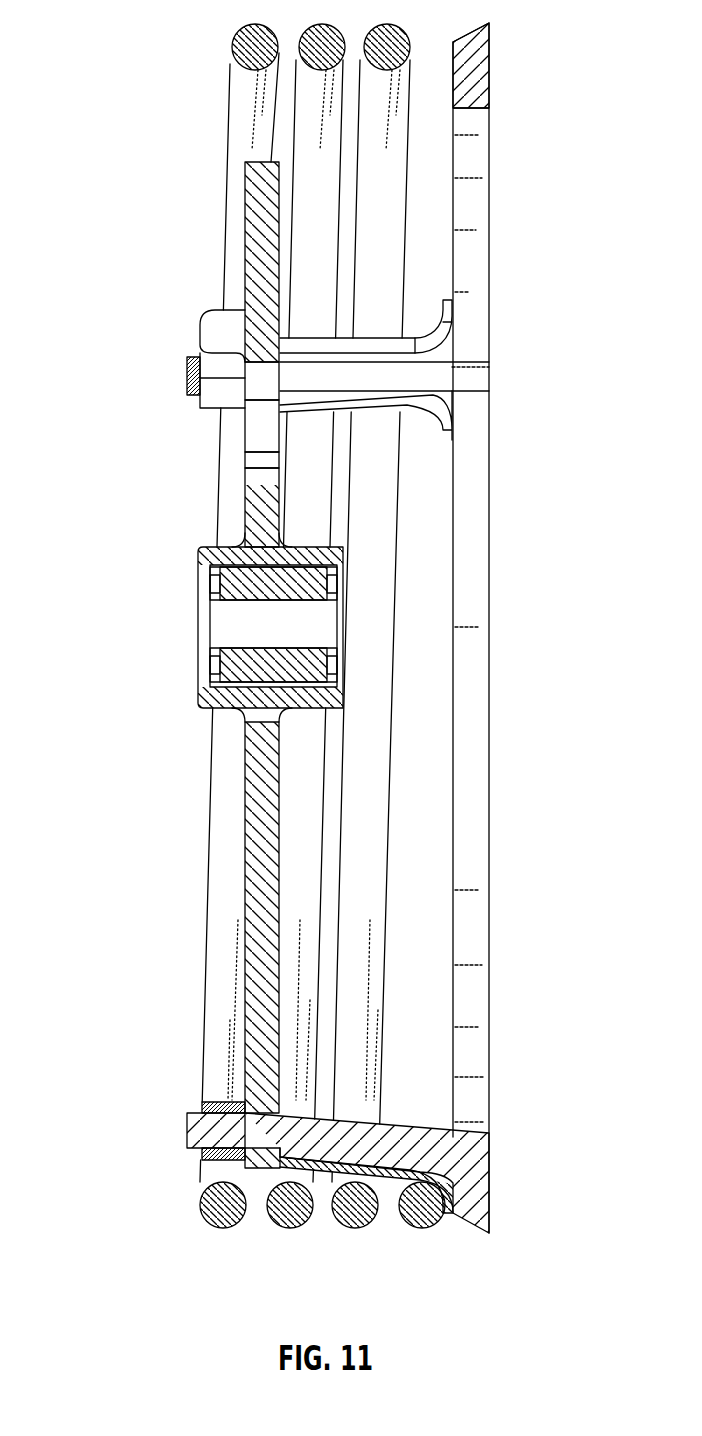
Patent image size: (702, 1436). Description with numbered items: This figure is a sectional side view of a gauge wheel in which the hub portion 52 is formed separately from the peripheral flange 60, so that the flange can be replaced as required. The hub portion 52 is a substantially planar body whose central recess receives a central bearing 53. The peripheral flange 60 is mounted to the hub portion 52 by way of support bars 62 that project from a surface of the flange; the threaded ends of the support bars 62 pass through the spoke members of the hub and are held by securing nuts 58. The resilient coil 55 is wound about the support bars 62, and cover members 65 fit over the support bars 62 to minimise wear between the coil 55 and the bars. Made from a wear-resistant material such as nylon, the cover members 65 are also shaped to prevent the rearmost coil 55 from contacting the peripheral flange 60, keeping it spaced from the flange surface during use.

The hub portion 52 is at (270, 890).
The central bearing 53 is at (129, 606).
The resilient coil 55 is at (393, 26).
The securing nuts 58 is at (213, 398).
The peripheral flange 60 is at (489, 172).
The support bars 62 is at (480, 365).
The cover members 65 is at (407, 405).